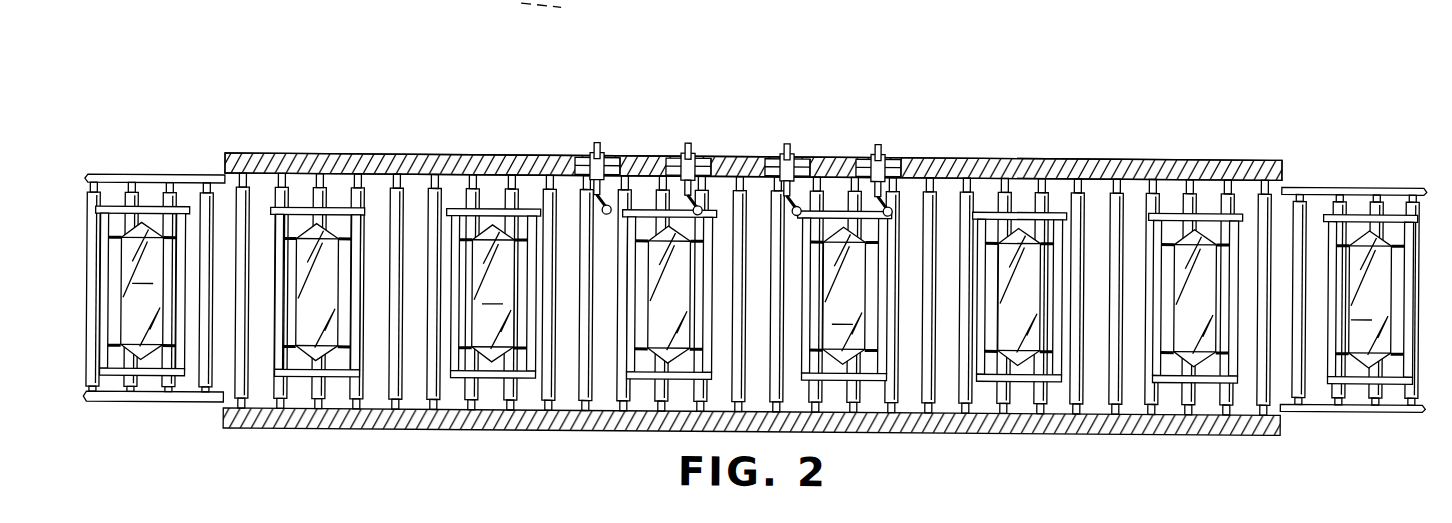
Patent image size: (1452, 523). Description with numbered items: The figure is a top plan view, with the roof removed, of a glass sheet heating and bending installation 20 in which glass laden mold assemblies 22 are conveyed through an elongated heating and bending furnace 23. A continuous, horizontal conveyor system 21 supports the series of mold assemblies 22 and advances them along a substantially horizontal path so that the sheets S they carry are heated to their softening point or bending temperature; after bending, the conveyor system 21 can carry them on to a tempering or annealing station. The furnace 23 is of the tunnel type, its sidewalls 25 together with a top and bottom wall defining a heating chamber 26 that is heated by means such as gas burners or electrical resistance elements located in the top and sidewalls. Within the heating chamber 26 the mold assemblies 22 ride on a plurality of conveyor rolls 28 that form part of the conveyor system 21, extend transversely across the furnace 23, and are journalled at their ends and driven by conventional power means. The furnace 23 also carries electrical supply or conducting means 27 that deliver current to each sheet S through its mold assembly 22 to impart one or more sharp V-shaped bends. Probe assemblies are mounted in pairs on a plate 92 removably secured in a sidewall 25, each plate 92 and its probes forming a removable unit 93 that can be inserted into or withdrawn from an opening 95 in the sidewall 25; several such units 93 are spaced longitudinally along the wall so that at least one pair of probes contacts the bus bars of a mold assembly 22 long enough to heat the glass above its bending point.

The glass sheet heating and bending installation 20 is at (1214, 60).
The conveyor system 21 is at (234, 378).
The mold assembly 22 is at (459, 201).
The heating and bending furnace 23 is at (1004, 154).
The sidewall 25 is at (258, 152).
The heating chamber 26 is at (568, 389).
The electrical supply or conducting means 27 is at (823, 90).
The conveyor roll 28 is at (397, 377).
The plate 92 is at (580, 155).
The removable unit 93 is at (590, 137).
The opening 95 is at (615, 155).